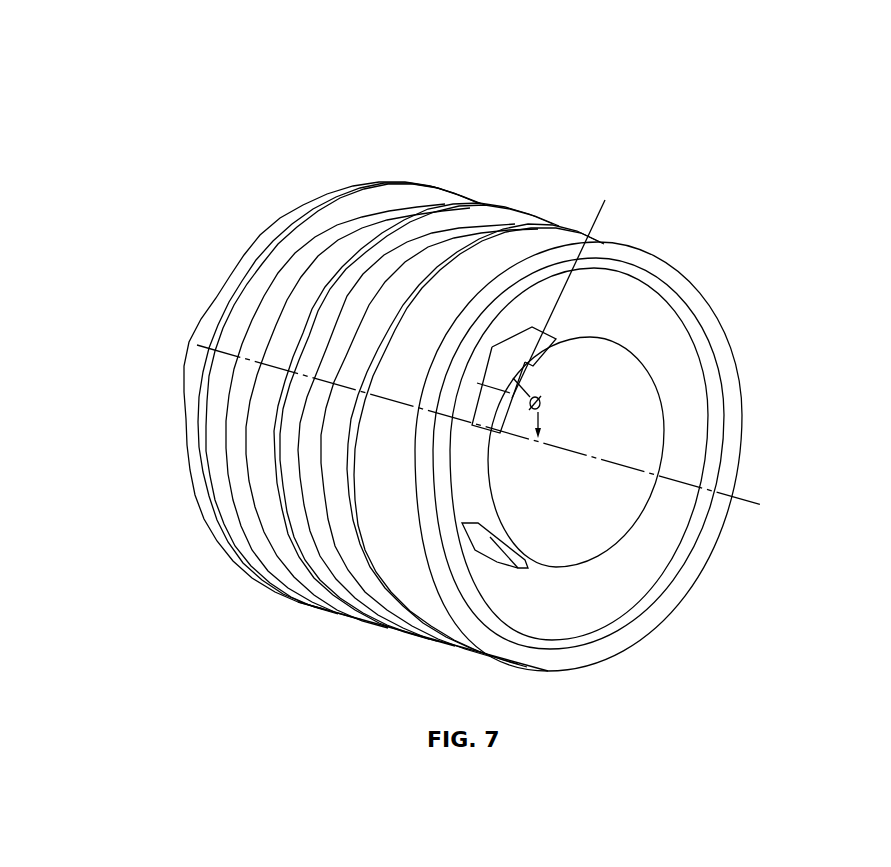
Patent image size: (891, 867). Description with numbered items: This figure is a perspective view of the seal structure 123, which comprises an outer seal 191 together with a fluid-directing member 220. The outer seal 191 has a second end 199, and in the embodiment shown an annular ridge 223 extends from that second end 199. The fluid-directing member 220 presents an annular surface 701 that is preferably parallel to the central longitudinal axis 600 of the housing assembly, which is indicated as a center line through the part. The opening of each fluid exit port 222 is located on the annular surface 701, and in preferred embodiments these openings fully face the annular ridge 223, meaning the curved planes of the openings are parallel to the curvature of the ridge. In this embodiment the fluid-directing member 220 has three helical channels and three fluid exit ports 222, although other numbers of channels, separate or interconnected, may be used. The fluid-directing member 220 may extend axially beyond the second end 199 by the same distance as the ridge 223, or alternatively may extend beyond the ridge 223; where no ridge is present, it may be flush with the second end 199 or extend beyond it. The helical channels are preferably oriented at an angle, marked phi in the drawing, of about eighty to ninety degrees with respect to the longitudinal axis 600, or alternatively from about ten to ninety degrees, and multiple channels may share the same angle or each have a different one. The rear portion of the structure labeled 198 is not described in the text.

The seal structure 123 is at (630, 110).
The rear rim 198 is at (230, 224).
The outer seal 191 is at (486, 186).
The second end 199 is at (633, 456).
The annular ridge 223 is at (650, 453).
The fluid-directing member 220 is at (621, 471).
The fluid exit port 222 is at (614, 313).
The annular surface 701 is at (605, 597).
The central longitudinal axis 600 is at (683, 483).